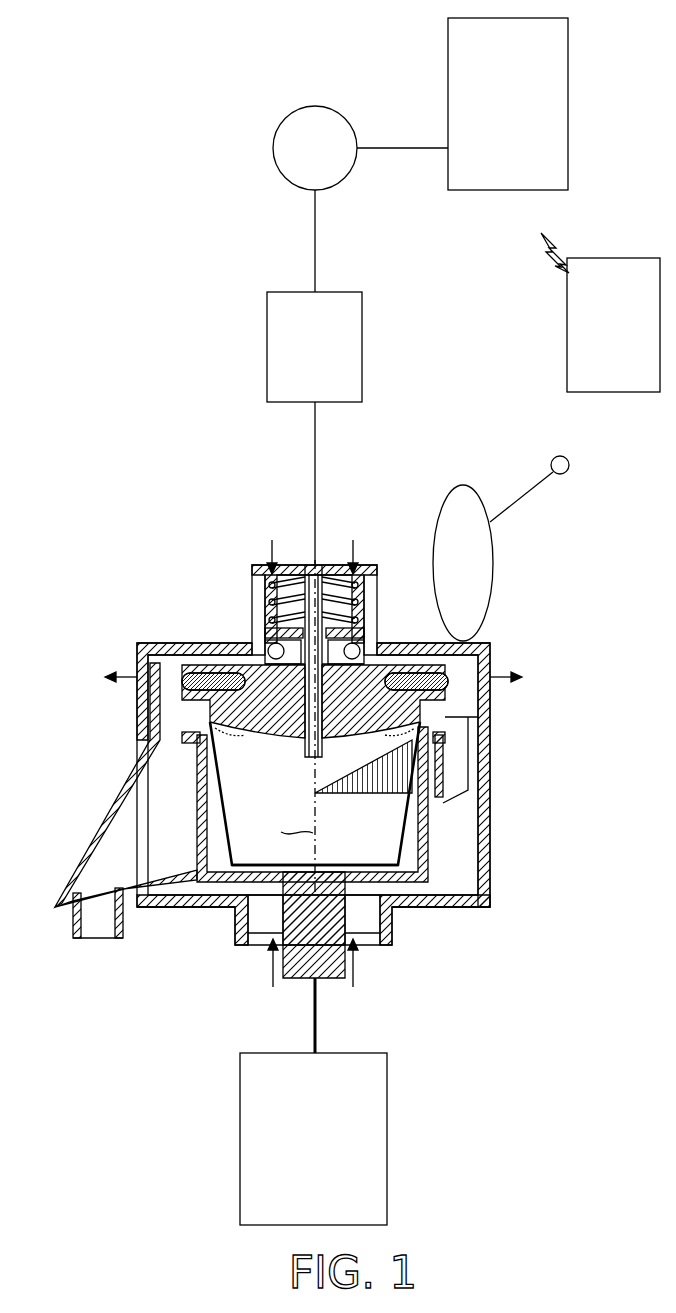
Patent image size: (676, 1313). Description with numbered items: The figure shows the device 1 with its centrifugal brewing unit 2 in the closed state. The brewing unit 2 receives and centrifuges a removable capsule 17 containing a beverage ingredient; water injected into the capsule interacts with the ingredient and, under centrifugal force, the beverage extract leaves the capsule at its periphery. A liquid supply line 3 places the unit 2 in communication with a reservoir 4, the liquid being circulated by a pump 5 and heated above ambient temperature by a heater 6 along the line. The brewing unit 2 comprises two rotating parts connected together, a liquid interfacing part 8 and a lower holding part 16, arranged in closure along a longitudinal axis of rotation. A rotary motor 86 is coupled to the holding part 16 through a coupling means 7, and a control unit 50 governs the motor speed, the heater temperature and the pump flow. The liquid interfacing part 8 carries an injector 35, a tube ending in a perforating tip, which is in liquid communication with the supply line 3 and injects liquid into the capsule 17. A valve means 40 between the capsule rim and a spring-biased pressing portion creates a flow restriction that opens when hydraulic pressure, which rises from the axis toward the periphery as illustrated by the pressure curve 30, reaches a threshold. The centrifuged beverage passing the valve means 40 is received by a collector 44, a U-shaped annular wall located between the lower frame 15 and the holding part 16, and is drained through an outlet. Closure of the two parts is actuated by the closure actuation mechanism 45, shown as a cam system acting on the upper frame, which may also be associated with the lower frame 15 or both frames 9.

The device 1 is at (156, 201).
The centrifugal brewing unit 2 is at (582, 770).
The liquid supply line 3 is at (314, 243).
The reservoir 4 is at (568, 30).
The pump 5 is at (273, 149).
The heater 6 is at (266, 308).
The coupling means 7 is at (314, 1018).
The liquid interfacing part 8 is at (228, 660).
The frames 9 is at (494, 637).
The lower frame 15 is at (491, 887).
The holding part 16 is at (428, 820).
The capsule 17 is at (225, 862).
The pressure curve 30 is at (362, 795).
The injector 35 is at (305, 745).
The valve means 40 is at (478, 719).
The collector 44 is at (185, 768).
The closure actuation mechanism 45 is at (442, 507).
The control unit 50 is at (567, 381).
The rotary motor 86 is at (388, 1062).